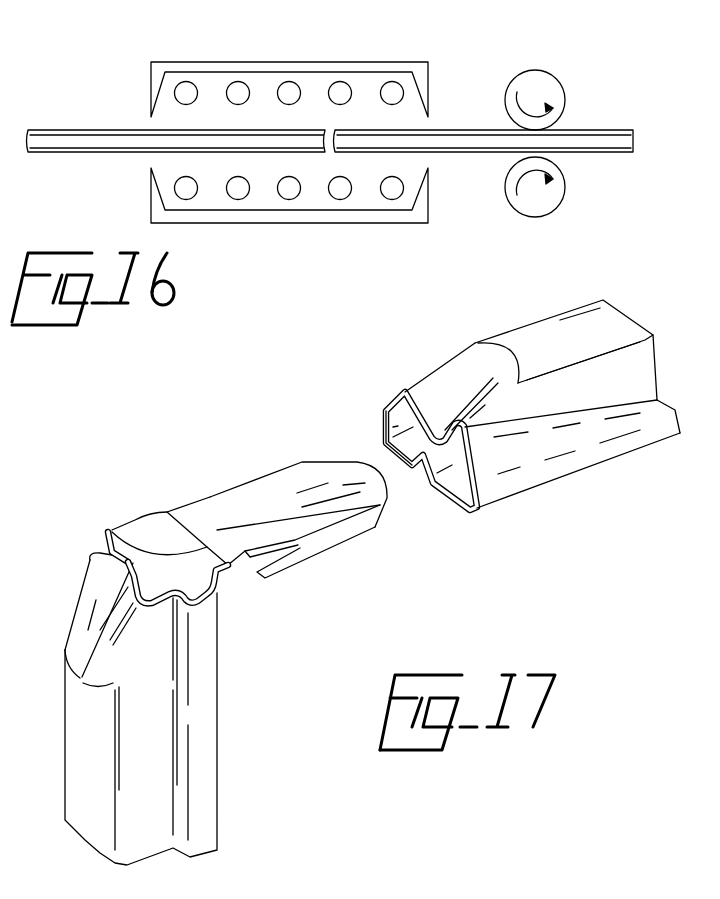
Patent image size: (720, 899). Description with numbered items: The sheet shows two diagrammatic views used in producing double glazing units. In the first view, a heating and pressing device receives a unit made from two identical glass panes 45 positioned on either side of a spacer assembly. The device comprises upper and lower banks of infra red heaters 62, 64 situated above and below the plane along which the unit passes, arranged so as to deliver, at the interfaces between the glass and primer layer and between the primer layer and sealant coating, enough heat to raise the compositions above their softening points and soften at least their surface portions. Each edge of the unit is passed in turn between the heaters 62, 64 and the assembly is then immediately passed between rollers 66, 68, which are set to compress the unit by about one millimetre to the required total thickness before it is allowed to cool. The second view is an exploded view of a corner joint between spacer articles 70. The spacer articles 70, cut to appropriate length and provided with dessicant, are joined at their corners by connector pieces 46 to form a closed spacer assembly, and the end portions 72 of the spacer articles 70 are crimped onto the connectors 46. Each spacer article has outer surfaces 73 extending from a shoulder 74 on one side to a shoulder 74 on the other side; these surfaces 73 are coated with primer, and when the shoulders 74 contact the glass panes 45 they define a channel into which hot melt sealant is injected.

In FIG. 16, the glass panes 45 is at (64, 130).
In FIG. 16, the upper bank of infra red heaters 62 is at (392, 92).
In FIG. 16, the lower bank of infra red heaters 64 is at (390, 190).
In FIG. 16, the roller 66 is at (519, 77).
In FIG. 16, the roller 68 is at (532, 212).
In FIG. 17, the connector piece 46 is at (252, 510).
In FIG. 17, the spacer article 70 is at (520, 484).
In FIG. 17, the end portion 72 is at (447, 387).
In FIG. 17, the outer surface 73 is at (575, 332).
In FIG. 17, the shoulder 74 is at (382, 432).